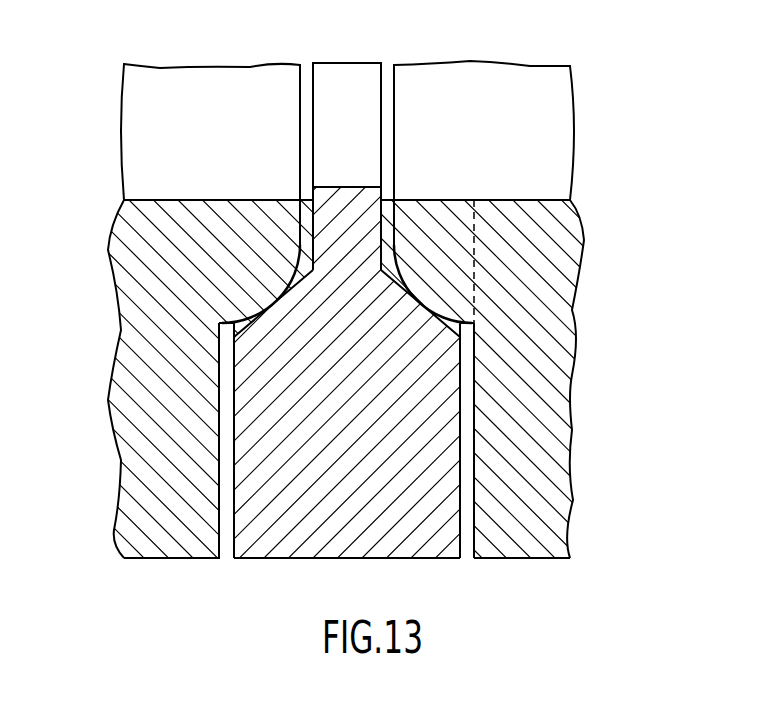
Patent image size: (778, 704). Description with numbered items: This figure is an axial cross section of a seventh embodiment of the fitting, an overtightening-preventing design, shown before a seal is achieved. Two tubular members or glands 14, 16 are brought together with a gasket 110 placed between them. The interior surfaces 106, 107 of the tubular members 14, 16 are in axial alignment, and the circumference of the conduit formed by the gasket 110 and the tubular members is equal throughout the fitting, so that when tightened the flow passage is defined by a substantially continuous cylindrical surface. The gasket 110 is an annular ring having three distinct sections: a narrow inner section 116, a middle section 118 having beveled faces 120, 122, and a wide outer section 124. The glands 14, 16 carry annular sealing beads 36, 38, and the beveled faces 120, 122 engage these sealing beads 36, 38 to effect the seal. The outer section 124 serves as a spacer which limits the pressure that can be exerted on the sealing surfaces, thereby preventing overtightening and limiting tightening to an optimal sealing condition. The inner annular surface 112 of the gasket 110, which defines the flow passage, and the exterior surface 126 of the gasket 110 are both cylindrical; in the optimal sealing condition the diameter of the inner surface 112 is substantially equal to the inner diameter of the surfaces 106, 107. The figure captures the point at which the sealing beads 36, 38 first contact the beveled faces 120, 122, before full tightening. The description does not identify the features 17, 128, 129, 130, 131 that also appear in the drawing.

The tubular member 14 is at (132, 385).
The tubular member 16 is at (569, 305).
The plate edge interface 17 is at (400, 257).
The annular sealing bead 36 is at (248, 210).
The annular sealing bead 38 is at (452, 220).
The interior surface 106 is at (135, 116).
The interior surface 107 is at (570, 106).
The gasket 110 is at (354, 63).
The inner annular surface 112 is at (325, 185).
The narrow inner section 116 is at (355, 207).
The middle section 118 is at (278, 300).
The beveled face 120 is at (453, 320).
The beveled face 122 is at (228, 318).
The wide outer section 124 is at (232, 426).
The exterior surface 126 is at (252, 560).
The right slot 128 is at (456, 557).
The central body 129 is at (243, 488).
The right slot outer wall 130 is at (483, 558).
The lower left plate wall 131 is at (218, 540).